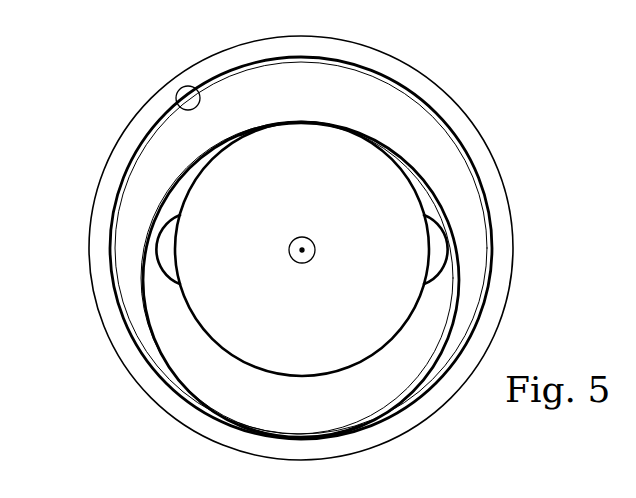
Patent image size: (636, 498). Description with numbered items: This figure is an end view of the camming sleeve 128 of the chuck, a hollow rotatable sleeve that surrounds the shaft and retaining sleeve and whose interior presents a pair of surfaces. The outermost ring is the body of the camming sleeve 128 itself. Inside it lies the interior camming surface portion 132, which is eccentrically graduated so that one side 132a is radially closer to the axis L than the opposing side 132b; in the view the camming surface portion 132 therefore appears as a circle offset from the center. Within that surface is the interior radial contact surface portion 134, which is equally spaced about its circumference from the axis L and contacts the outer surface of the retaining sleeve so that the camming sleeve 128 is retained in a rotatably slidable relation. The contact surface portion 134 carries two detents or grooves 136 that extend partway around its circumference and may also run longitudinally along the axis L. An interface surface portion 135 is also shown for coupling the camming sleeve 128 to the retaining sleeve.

The camming sleeve 128 is at (463, 108).
The interior camming surface portion 132 is at (457, 318).
The side of camming surface portion 132a is at (301, 124).
The opposing side of camming surface portion 132b is at (301, 439).
The interior radial contact surface portion 134 is at (213, 345).
The interface surface portion 135 is at (181, 102).
The grooves 136 is at (167, 249).
The axis L is at (312, 240).